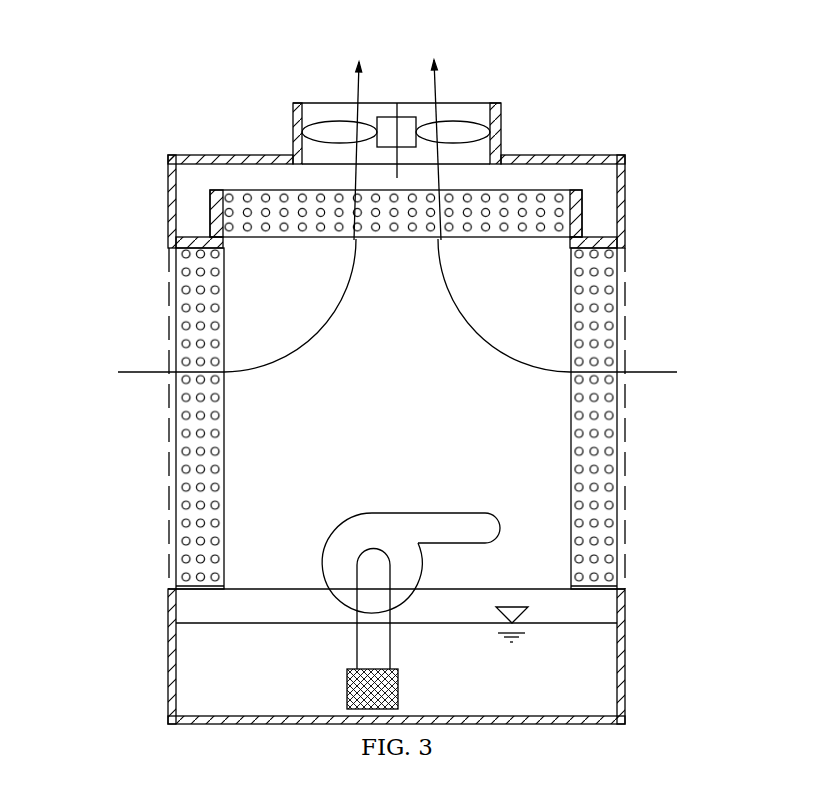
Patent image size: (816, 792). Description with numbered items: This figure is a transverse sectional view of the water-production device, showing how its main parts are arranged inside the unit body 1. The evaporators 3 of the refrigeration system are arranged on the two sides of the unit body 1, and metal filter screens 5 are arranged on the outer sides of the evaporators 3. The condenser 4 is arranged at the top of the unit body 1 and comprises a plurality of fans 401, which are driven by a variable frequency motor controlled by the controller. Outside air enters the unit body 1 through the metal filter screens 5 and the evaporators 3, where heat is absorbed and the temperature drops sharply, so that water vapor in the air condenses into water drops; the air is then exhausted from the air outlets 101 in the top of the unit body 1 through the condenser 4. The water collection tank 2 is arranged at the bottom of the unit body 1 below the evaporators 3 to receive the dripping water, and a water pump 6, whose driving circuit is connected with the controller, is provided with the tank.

The unit body 1 is at (207, 155).
The air outlets 101 is at (474, 112).
The fans 401 is at (342, 132).
The condenser 4 is at (293, 189).
The evaporators 3 is at (188, 315).
The metal filter screens 5 is at (167, 457).
The water collection tank 2 is at (587, 683).
The water pump 6 is at (358, 535).